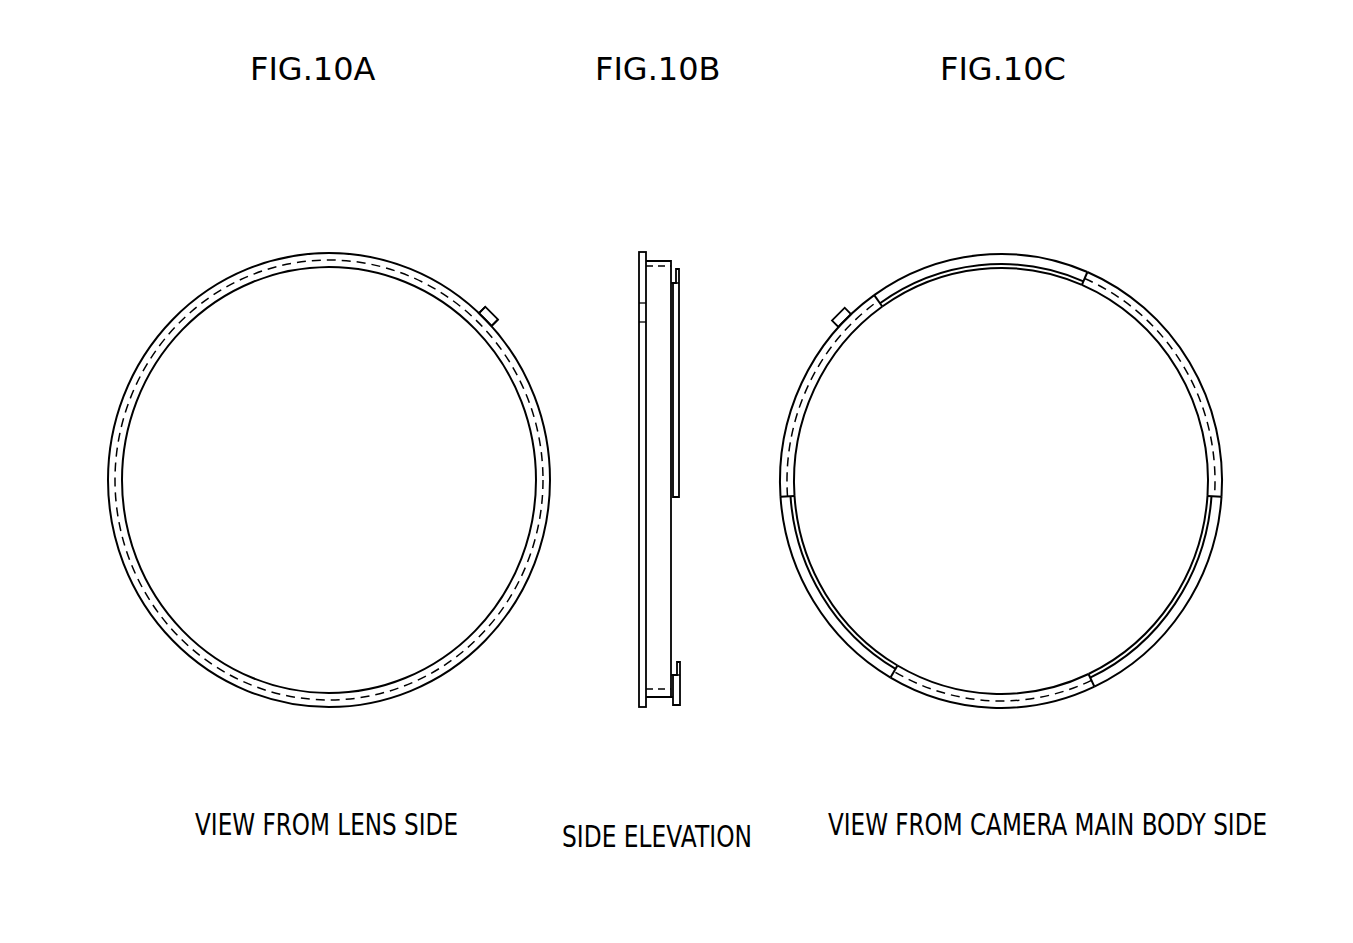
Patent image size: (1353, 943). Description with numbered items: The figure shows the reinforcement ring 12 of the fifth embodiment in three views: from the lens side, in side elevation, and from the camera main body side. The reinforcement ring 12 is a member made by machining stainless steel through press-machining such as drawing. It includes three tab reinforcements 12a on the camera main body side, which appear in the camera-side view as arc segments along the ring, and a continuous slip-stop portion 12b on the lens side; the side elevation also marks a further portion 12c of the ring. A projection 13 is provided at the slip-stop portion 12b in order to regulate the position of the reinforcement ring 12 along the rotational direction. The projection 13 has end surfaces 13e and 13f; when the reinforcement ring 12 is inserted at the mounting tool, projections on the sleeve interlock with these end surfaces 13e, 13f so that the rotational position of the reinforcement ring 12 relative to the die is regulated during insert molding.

In FIG. 10B, the reinforcement ring 12 is at (662, 586).
In FIG. 10B, the tab reinforcement 12a is at (678, 392).
In FIG. 10C, the tab reinforcement 12a is at (1142, 308).
In FIG. 10B, the slip-stop portion 12b is at (640, 697).
In FIG. 10B, the rear face of mount ring 12c is at (660, 700).
In FIG. 10A, the projection 13 is at (492, 300).
In FIG. 10A, the end surface 13e is at (474, 303).
In FIG. 10A, the end surface 13f is at (498, 322).